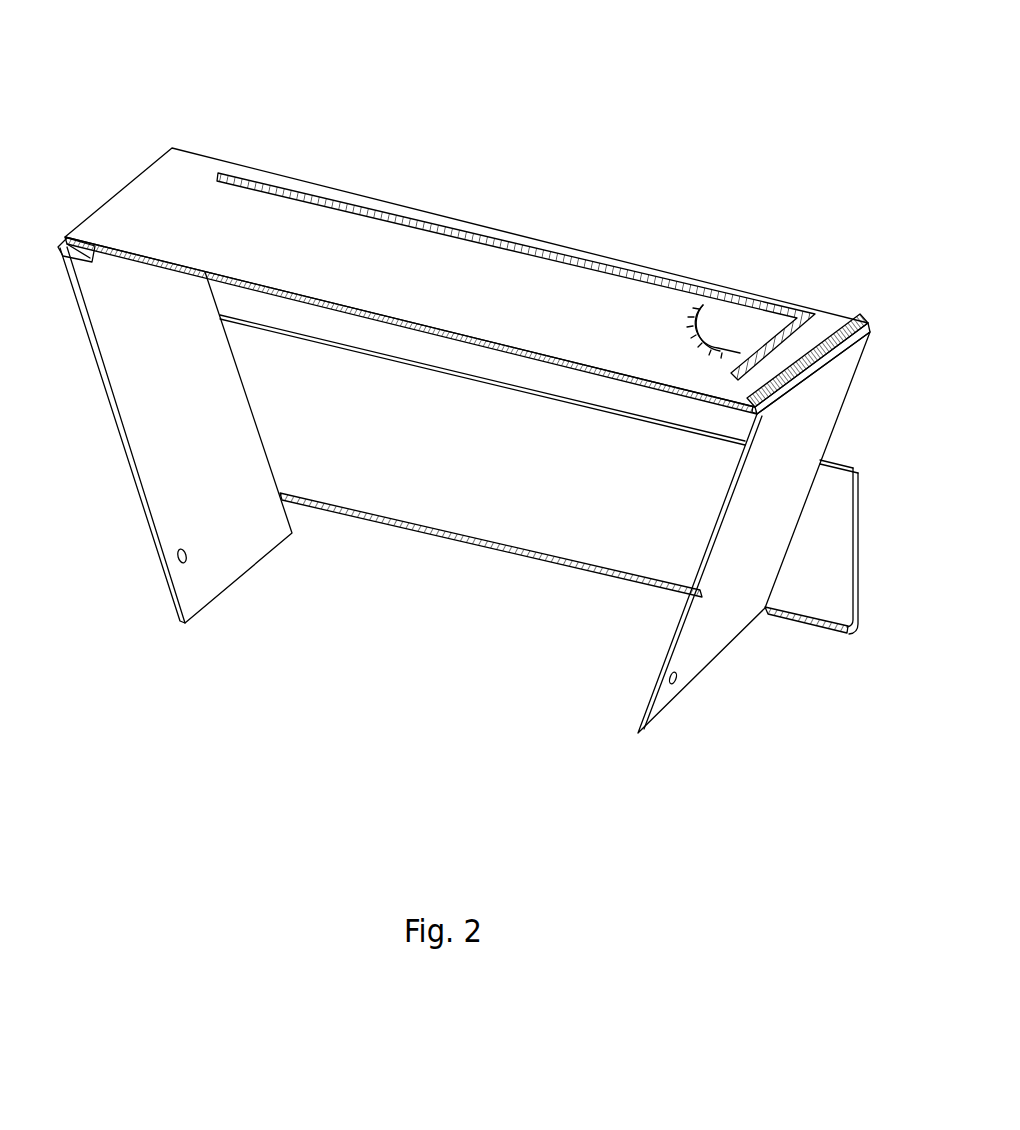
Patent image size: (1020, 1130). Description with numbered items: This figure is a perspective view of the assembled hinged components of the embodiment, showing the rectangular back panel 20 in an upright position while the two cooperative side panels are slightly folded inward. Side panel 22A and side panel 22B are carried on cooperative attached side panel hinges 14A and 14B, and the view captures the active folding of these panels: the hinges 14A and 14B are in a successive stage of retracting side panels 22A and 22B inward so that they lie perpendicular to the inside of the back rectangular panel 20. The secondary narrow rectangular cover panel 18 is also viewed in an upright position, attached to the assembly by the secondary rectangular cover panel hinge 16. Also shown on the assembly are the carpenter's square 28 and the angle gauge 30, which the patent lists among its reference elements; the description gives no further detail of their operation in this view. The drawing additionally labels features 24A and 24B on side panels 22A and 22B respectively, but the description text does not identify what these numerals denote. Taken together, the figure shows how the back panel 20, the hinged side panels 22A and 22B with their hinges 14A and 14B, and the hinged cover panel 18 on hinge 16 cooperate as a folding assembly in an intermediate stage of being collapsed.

The side panel hinge 14A is at (840, 338).
The side panel hinge 14B is at (59, 250).
The secondary rectangular cover panel hinge 16 is at (525, 557).
The secondary narrow rectangular cover panel 18 is at (470, 430).
The rectangular back panel 20 is at (185, 205).
The side panel 22A is at (738, 595).
The side panel 22B is at (228, 485).
The hole in right leg 24A is at (673, 685).
The hole in left leg 24B is at (180, 561).
The carpenter's square 28 is at (455, 226).
The angle gauge 30 is at (710, 337).